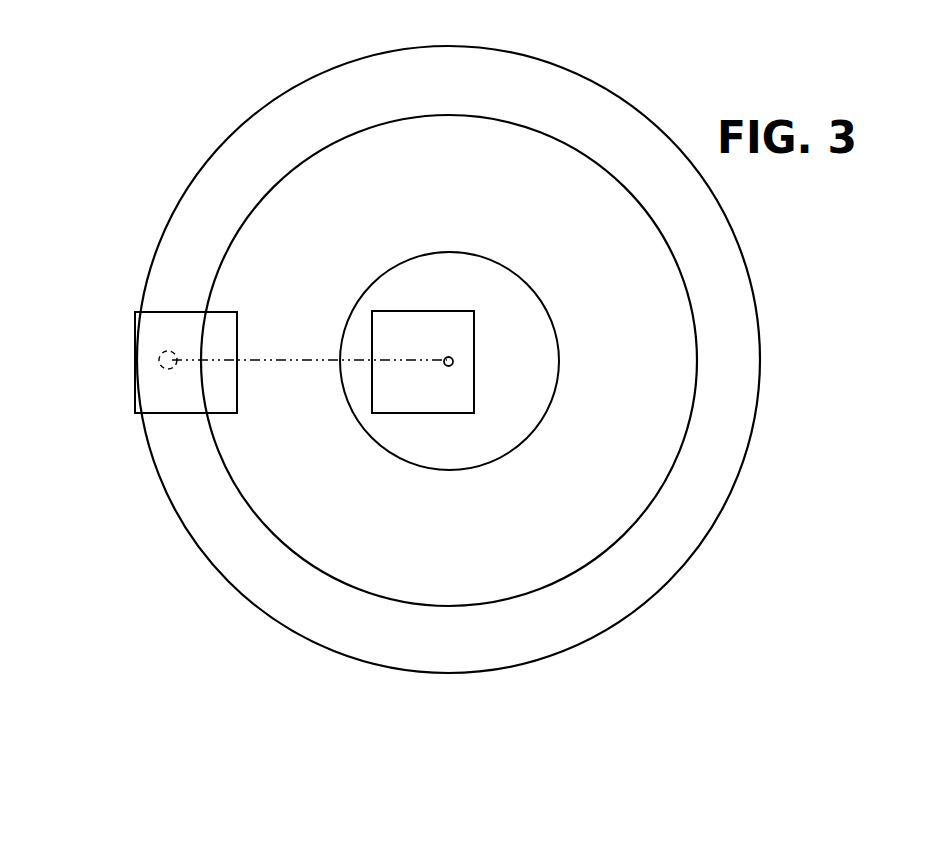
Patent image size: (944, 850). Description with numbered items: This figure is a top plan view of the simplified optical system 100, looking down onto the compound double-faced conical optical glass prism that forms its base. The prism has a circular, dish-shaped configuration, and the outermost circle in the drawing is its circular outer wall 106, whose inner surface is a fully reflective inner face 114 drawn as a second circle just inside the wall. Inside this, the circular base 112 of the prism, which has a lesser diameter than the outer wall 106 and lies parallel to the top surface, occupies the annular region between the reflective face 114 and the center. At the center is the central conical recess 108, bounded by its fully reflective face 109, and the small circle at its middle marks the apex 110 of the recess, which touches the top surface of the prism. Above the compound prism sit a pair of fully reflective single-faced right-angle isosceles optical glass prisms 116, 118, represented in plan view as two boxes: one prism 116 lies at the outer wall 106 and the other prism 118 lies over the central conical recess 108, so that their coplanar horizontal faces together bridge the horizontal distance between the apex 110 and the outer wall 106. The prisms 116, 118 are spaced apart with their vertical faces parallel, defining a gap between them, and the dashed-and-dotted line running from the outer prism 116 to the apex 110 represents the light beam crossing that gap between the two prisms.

The optical system 100 is at (772, 268).
The circular outer wall 106 is at (172, 215).
The central conical recess 108 is at (488, 282).
The reflective face 109 is at (521, 292).
The apex 110 is at (453, 362).
The circular base 112 is at (398, 213).
The reflective inner face 114 is at (212, 149).
The single-faced right-angle isosceles optical glass prism 116 is at (135, 325).
The single-faced right-angle isosceles optical glass prism 118 is at (452, 304).